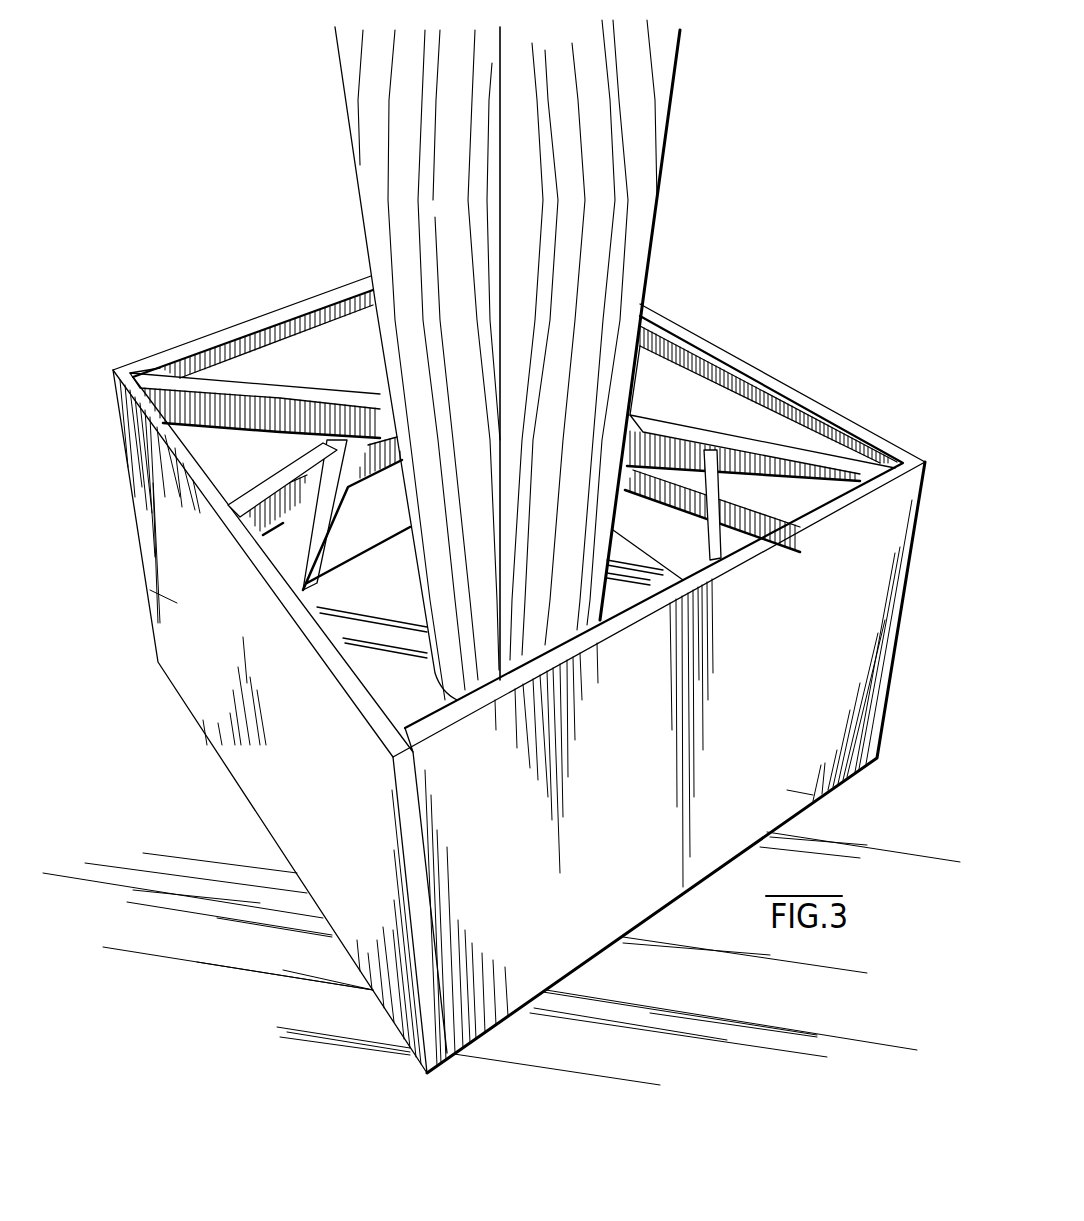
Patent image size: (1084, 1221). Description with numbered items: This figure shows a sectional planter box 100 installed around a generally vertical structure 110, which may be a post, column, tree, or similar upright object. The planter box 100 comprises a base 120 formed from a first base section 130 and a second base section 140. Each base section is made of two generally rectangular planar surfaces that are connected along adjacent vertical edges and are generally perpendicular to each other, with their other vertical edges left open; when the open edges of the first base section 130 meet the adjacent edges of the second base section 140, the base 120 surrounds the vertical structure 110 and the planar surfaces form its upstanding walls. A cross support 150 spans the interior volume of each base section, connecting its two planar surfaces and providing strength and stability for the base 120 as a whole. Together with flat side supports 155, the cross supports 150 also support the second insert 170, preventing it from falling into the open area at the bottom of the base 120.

The sectional planter box 100 is at (502, 610).
The generally vertical structure 110 is at (368, 93).
The base 120 is at (157, 324).
The first base section 130 is at (178, 605).
The second base section 140 is at (790, 793).
The cross support 150 is at (262, 496).
The flat side support 155 is at (268, 520).
The second insert 170 is at (682, 403).